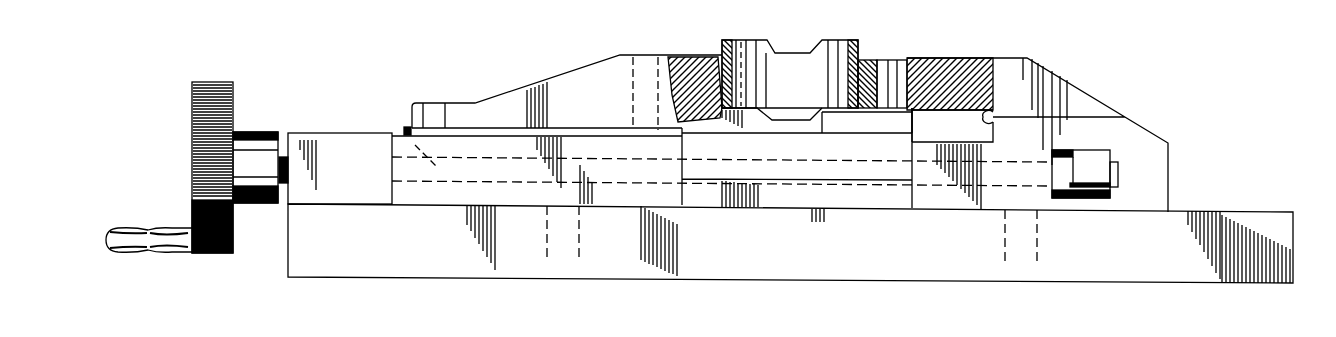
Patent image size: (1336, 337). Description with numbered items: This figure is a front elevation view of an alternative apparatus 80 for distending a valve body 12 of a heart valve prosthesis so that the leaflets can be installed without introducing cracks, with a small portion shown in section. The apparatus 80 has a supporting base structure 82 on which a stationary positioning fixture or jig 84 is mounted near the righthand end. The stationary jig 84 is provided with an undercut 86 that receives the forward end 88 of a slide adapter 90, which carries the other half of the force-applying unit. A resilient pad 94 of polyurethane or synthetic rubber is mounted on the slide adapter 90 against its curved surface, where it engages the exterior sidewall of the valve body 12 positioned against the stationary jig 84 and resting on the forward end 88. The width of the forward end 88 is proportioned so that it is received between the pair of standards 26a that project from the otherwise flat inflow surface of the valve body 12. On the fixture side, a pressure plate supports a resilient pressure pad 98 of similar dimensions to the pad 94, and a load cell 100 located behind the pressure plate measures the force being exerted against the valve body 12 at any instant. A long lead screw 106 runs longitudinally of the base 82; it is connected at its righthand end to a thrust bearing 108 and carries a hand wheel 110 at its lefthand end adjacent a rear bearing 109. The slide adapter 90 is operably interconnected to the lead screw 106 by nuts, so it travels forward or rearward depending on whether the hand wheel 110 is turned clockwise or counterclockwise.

The apparatus 80 is at (1232, 153).
The supporting base structure 82 is at (415, 256).
The stationary positioning fixture or jig 84 is at (1046, 86).
The undercut 86 is at (997, 118).
The forward end of slide adapter 88 is at (845, 125).
The slide adapter 90 is at (543, 73).
The resilient pad 94 is at (722, 57).
The resilient pressure pad 98 is at (870, 58).
The load cell 100 is at (903, 70).
The lead screw 106 is at (401, 128).
The thrust bearing 108 is at (1087, 198).
The rear bearing 109 is at (328, 133).
The hand wheel 110 is at (192, 105).
The valve body 12 is at (828, 45).
The standards or extensions 26a is at (787, 113).